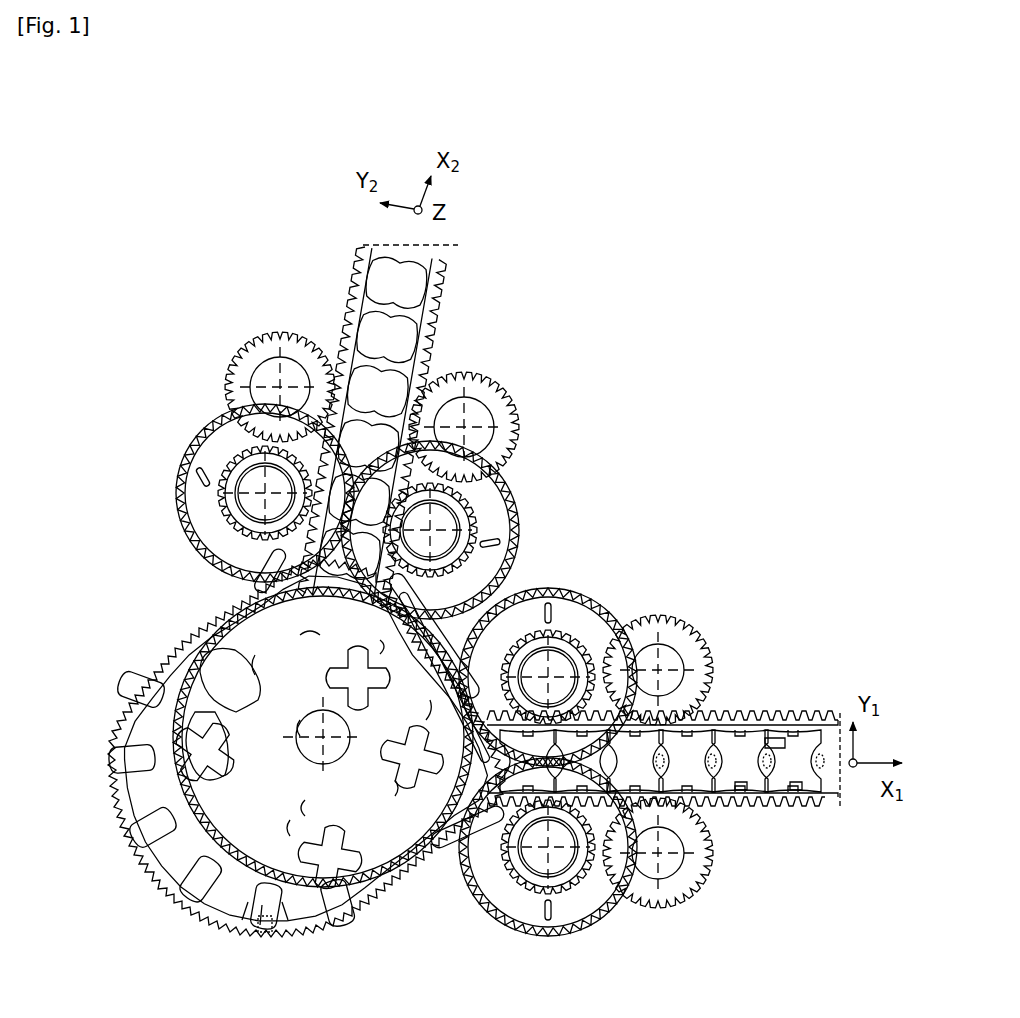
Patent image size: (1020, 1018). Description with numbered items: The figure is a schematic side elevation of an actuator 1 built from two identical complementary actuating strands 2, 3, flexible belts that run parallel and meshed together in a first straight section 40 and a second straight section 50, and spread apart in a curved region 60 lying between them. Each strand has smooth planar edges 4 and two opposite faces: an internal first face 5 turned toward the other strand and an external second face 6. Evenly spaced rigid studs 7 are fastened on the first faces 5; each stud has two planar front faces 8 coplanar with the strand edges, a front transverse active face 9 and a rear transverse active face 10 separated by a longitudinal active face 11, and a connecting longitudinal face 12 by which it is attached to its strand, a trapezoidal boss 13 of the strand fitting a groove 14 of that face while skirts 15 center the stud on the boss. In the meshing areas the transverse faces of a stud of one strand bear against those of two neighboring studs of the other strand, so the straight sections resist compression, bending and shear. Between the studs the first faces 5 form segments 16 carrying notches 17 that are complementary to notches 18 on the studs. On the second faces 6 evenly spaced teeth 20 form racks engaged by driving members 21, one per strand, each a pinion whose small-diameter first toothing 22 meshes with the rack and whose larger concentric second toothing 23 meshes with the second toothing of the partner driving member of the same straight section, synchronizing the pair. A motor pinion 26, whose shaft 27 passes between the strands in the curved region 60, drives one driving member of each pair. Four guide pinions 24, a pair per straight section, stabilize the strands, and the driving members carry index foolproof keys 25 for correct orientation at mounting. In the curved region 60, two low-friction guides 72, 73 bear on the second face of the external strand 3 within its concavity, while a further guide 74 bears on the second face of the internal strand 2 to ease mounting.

The actuator 1 is at (638, 266).
The actuating strand 2 is at (468, 258).
The actuating strand 3 is at (347, 300).
The edges 4 is at (372, 426).
The first face 5 is at (352, 318).
The second face 6 is at (340, 342).
The stud 7 is at (355, 683).
The front faces 8 is at (200, 760).
The front transverse active face 9 is at (340, 650).
The rear transverse active face 10 is at (352, 740).
The longitudinal active face 11 is at (816, 740).
The connecting longitudinal face 12 is at (776, 805).
The boss 13 is at (267, 935).
The groove 14 is at (190, 905).
The skirts 15 is at (255, 930).
The segments 16 is at (418, 712).
The notches 17 is at (385, 765).
The notches 18 is at (320, 690).
The teeth 20 is at (148, 700).
The driving member 21 is at (178, 530).
The first toothing 22 is at (592, 640).
The second toothing 23 is at (634, 630).
The guide pinion 24 is at (245, 340).
The index foolproof key 25 is at (203, 468).
The motor pinion 26 is at (248, 612).
The shaft 27 is at (290, 760).
The first straight section 40 is at (669, 785).
The second straight section 50 is at (414, 412).
The curved region 60 is at (150, 882).
The guide 72 is at (462, 850).
The guide 73 is at (262, 576).
The guide 74 is at (442, 640).